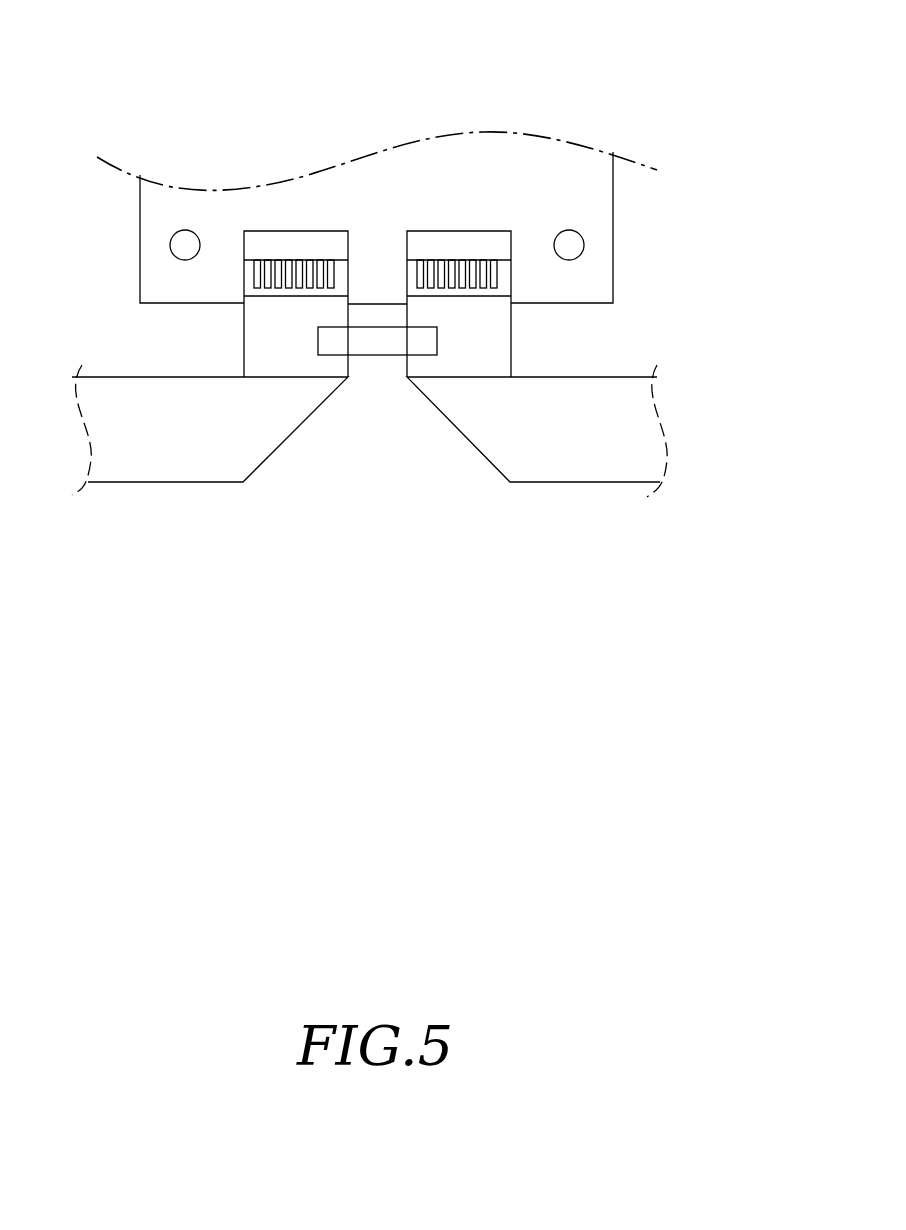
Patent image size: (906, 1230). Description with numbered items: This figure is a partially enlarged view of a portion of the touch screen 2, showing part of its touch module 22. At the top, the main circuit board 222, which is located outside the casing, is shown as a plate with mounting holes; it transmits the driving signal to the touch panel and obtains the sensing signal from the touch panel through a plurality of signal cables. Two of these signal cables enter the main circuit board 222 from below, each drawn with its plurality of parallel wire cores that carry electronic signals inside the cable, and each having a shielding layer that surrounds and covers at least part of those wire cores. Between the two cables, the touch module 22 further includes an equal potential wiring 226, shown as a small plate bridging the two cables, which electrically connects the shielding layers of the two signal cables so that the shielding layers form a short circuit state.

The touch screen 2 is at (352, 108).
The touch module 22 is at (700, 197).
The main circuit board 222 is at (598, 212).
The equal potential wiring 226 is at (375, 345).